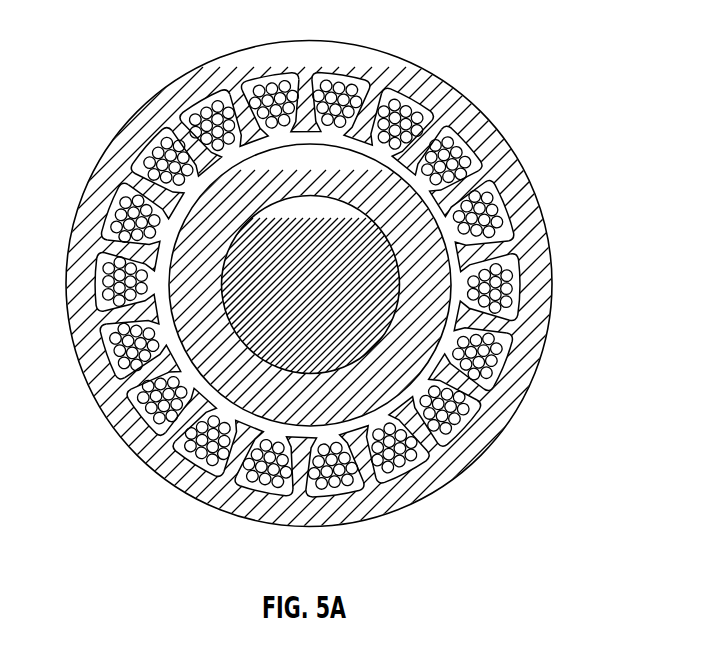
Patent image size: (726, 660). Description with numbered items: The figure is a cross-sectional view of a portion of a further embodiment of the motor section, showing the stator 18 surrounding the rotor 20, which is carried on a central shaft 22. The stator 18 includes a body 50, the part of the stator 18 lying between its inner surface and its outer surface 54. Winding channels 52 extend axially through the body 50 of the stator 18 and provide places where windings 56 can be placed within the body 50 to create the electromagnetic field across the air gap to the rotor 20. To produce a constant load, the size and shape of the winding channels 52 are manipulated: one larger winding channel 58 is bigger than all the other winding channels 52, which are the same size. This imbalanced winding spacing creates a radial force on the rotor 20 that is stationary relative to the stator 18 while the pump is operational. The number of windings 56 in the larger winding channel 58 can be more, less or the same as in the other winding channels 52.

The stator 18 is at (98, 162).
The rotor 20 is at (215, 177).
The shaft 22 is at (352, 203).
The body 50 is at (185, 390).
The winding channels 52 is at (460, 130).
The outer surface 54 is at (547, 233).
The windings 56 is at (253, 97).
The larger winding channel 58 is at (515, 317).